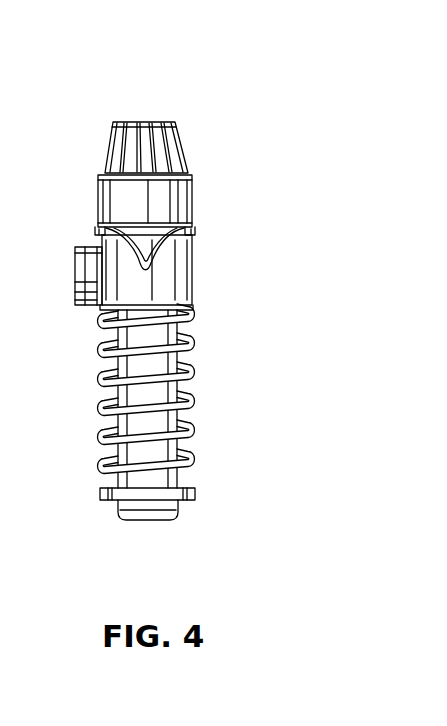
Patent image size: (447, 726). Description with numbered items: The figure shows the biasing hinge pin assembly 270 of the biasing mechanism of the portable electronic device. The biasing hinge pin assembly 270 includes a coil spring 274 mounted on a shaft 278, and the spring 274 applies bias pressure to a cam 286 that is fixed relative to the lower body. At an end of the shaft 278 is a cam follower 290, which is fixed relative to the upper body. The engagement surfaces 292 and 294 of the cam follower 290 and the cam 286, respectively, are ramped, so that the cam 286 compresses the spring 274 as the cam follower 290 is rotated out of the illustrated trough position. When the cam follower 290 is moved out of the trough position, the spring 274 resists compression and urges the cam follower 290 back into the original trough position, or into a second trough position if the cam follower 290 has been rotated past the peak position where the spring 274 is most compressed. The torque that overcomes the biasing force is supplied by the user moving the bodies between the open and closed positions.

The biasing hinge pin assembly 270 is at (210, 154).
The cam follower 290 is at (187, 200).
The engagement surface 292 is at (182, 229).
The engagement surface 294 is at (190, 242).
The cam 286 is at (195, 283).
The shaft 278 is at (183, 425).
The coil spring 274 is at (185, 433).